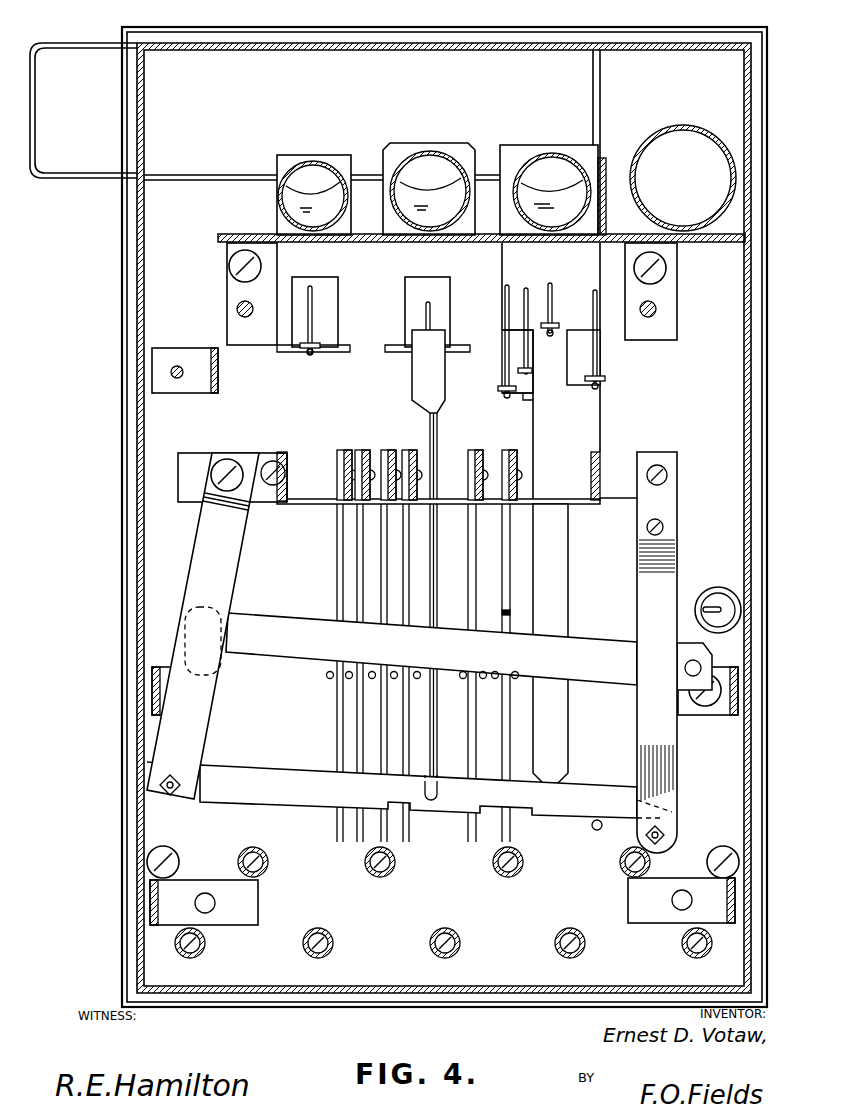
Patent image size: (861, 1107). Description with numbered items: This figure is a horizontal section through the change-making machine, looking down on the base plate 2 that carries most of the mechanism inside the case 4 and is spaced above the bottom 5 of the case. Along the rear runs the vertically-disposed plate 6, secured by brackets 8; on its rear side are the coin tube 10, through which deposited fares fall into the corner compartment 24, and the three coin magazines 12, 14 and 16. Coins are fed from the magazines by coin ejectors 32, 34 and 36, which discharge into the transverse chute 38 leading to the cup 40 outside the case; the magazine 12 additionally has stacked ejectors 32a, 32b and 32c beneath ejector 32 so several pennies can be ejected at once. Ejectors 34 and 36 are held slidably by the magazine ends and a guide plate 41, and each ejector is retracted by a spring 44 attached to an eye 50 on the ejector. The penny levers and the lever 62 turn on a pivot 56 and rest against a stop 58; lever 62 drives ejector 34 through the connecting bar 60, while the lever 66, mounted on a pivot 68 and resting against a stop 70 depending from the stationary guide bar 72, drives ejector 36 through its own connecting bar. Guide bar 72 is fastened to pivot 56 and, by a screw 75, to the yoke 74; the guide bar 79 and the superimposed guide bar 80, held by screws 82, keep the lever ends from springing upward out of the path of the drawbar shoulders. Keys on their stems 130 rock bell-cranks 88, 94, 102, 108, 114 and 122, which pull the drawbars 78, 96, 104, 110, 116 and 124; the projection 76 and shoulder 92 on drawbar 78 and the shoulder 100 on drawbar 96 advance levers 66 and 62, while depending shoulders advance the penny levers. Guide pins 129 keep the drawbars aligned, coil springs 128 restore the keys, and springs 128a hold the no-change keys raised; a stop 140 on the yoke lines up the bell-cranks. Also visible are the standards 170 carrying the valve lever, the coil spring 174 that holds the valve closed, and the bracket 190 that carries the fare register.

The base plate 2 is at (598, 190).
The case 4 is at (137, 518).
The bottom 5 is at (127, 551).
The vertically-disposed plate 6 is at (220, 234).
The brackets 8 is at (236, 250).
The coin tube 10 is at (681, 126).
The coin magazine 12 is at (548, 145).
The coin magazine 14 is at (430, 150).
The coin magazine 16 is at (314, 160).
The compartment 24 is at (742, 92).
The coin ejector 32 is at (551, 371).
The coin ejector 32a is at (512, 348).
The coin ejector 32b is at (516, 378).
The coin ejector 32c is at (519, 398).
The coin ejector 34 is at (422, 288).
The coin ejector 36 is at (327, 288).
The chute 38 is at (288, 68).
The cup 40 is at (83, 110).
The guide plate 41 is at (250, 292).
The spring 44 is at (426, 311).
The eye 50 is at (320, 348).
The pivot 56 is at (158, 785).
The stop 58 is at (596, 831).
The connecting bar 60 is at (439, 433).
The lever 62 is at (445, 789).
The lever 66 is at (392, 715).
The pivot 68 is at (712, 658).
The stop 70 is at (206, 672).
The guide bar 72 is at (200, 565).
The yoke 74 is at (270, 462).
The screw 75 is at (227, 462).
The projection 76 is at (512, 705).
The drawbar 78 is at (512, 738).
The guide bar 79 is at (676, 768).
The guide bar 80 is at (665, 582).
The screws 82 is at (664, 525).
The bell-crank 88 is at (516, 462).
The shoulder 92 is at (510, 834).
The bell-crank 94 is at (418, 462).
The drawbar 96 is at (406, 610).
The shoulder 100 is at (408, 846).
The bell-crank 102 is at (364, 450).
The draw bar 104 is at (359, 610).
The bell-crank 108 is at (476, 456).
The draw bar 110 is at (483, 622).
The bell-crank 114 is at (392, 450).
The draw bar 116 is at (383, 612).
The bell-crank 122 is at (344, 450).
The draw bar 124 is at (338, 610).
The coil spring 128 is at (565, 938).
The coil spring 128a is at (95, 950).
The guide pins 129 is at (328, 678).
The key stem 130 is at (443, 940).
The stop 140 is at (578, 506).
The standards 170 is at (740, 688).
The coil spring 174 is at (730, 590).
The bracket 190 is at (160, 372).